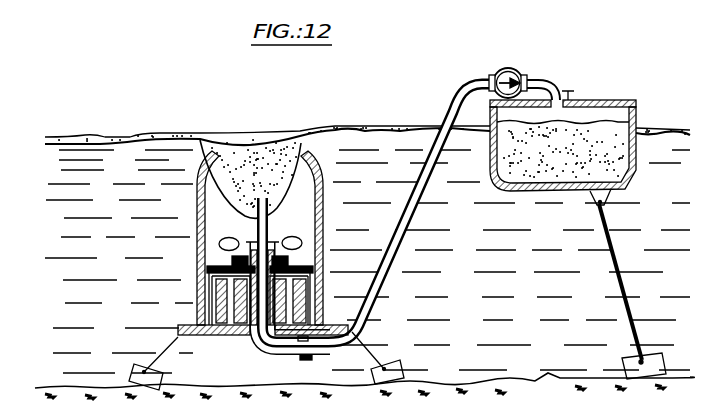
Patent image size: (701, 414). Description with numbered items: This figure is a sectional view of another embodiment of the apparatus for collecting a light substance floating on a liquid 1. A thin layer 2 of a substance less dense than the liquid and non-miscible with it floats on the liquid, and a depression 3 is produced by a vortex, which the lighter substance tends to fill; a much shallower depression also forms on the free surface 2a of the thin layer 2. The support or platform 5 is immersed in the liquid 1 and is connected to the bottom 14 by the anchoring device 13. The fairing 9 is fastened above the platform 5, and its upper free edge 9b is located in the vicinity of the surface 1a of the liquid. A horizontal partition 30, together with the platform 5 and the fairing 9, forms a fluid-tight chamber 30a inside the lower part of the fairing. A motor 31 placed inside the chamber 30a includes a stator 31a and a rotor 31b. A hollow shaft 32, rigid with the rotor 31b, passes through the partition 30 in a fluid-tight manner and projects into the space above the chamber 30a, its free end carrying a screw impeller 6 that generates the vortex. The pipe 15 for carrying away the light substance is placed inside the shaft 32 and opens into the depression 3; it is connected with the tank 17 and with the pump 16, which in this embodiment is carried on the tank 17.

The liquid 1 is at (389, 190).
The surface 1a is at (84, 146).
The thin layer 2 is at (290, 152).
The free surface 2a is at (118, 138).
The depression 3 is at (250, 180).
The support or platform 5 is at (222, 338).
The screw impeller 6 is at (314, 228).
The fairing 9 is at (322, 236).
The upper free edge 9b is at (316, 158).
The anchoring device 13 is at (173, 347).
The bottom 14 is at (540, 376).
The pipe 15 is at (263, 196).
The pump 16 is at (506, 70).
The tank 17 is at (595, 100).
The horizontal partition 30 is at (212, 265).
The fluid-tight chamber 30a is at (208, 285).
The motor 31 is at (216, 306).
The stator 31a is at (296, 290).
The rotor 31b is at (318, 314).
The hollow shaft 32 is at (293, 259).